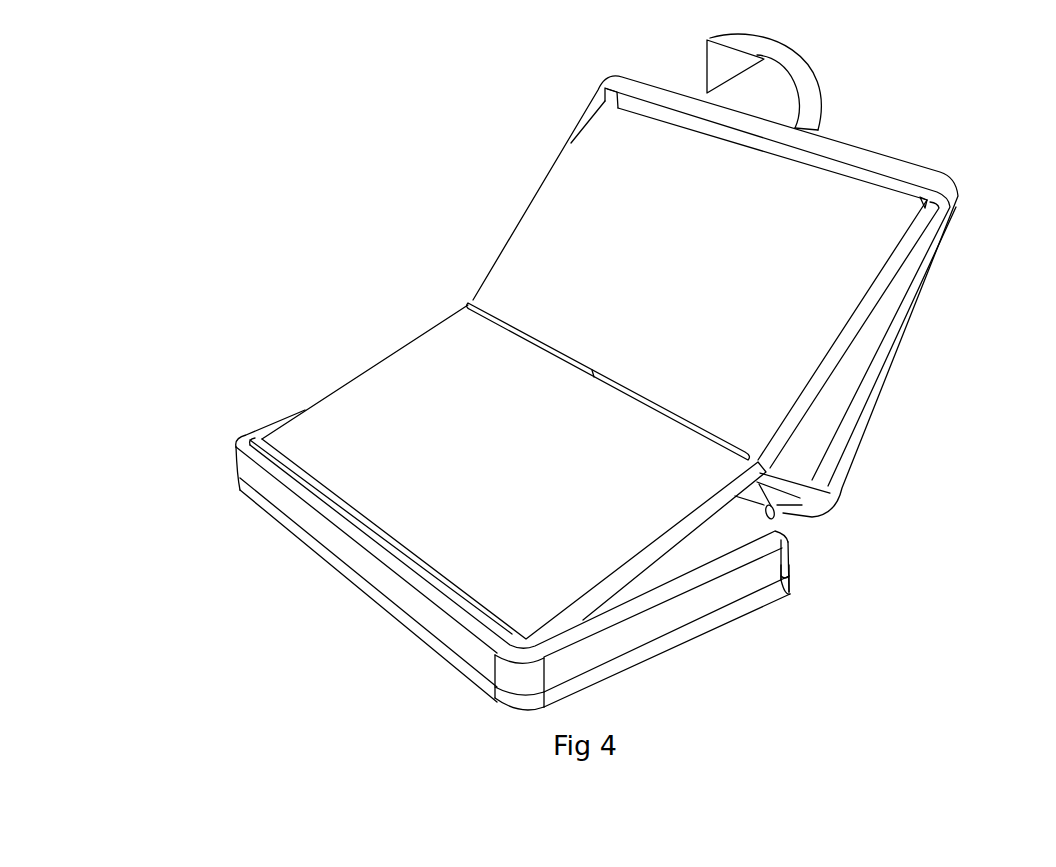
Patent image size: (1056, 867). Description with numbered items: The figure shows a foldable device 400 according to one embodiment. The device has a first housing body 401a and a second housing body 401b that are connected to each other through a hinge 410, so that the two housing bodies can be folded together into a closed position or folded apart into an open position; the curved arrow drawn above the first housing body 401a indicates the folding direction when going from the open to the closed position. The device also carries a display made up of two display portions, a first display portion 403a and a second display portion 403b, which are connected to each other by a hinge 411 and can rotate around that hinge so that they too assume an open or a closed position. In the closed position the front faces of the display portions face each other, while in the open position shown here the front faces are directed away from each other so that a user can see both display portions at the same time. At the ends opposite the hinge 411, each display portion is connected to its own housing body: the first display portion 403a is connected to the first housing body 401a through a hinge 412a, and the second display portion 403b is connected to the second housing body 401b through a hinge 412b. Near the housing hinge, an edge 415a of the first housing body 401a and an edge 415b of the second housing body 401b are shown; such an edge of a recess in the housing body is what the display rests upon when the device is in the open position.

The device 400 is at (578, 97).
The first housing body 401a is at (942, 178).
The second housing body 401b is at (311, 552).
The first display portion 403a is at (810, 247).
The second display portion 403b is at (381, 395).
The hinge 410 is at (775, 514).
The hinge 411 is at (490, 316).
The hinge 412a is at (946, 208).
The hinge 412b is at (265, 441).
The edge 415a is at (802, 505).
The edge 415b is at (788, 572).